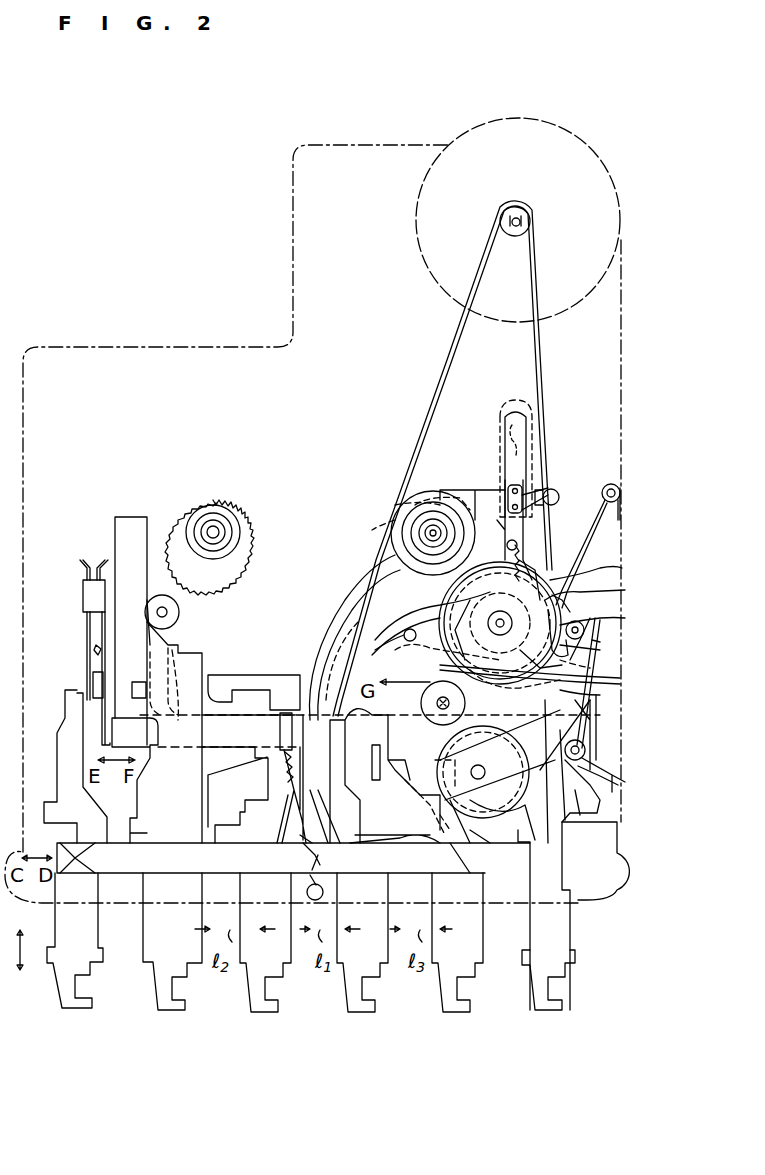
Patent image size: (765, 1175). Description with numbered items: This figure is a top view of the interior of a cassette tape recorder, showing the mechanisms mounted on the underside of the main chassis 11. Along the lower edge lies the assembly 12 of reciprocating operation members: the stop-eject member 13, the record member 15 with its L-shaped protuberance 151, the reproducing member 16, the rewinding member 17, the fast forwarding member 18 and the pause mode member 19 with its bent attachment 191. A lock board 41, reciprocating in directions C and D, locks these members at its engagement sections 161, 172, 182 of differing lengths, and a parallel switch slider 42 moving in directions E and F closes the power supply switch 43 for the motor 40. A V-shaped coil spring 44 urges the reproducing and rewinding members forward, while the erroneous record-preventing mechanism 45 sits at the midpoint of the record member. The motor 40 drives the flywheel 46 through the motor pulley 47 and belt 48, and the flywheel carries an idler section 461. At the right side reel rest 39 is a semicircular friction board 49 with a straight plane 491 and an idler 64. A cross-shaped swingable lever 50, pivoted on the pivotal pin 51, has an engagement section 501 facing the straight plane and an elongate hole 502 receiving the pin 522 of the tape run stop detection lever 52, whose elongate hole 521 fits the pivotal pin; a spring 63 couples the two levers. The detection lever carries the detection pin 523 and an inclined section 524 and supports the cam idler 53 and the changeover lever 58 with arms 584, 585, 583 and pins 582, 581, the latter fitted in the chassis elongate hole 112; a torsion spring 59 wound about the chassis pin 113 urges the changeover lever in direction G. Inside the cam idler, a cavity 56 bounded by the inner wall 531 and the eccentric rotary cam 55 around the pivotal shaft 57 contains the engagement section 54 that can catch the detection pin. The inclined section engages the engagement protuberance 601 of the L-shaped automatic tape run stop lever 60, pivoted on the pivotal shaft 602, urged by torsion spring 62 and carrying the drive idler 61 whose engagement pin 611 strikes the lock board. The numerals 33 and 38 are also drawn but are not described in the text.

The main chassis 11 is at (624, 662).
The assembly of operation members 12 is at (310, 998).
The stop-eject member 13 is at (74, 1012).
The record member 15 is at (174, 1012).
The reproducing member 16 is at (364, 1012).
The rewinding member 17 is at (270, 1012).
The fast forwarding member 18 is at (460, 1012).
The pause mode member 19 is at (555, 1012).
The slide block 33 is at (395, 780).
The gear 38 is at (234, 519).
The right side reel rest 39 is at (410, 540).
The motor 40 is at (422, 246).
The lock board 41 is at (218, 868).
The switch slider 42 is at (222, 735).
The power supply switch 43 is at (86, 650).
The coil spring 44 is at (295, 858).
The erroneous record-preventing mechanism 45 is at (182, 662).
The flywheel 46 is at (334, 630).
The motor pulley 47 is at (516, 237).
The belt 48 is at (542, 404).
The friction board 49 is at (400, 528).
The swingable lever 50 is at (480, 490).
The pivotal pin 51 is at (558, 494).
The tape run stop detection lever 52 is at (540, 520).
The cam idler 53 is at (540, 668).
The engagement section 54 is at (598, 683).
The rotary cam 55 is at (500, 610).
The cavity 56 is at (404, 636).
The pivotal shaft 57 is at (574, 630).
The changeover lever 58 is at (454, 703).
The torsion spring 59 is at (584, 553).
The automatic tape run stop lever 60 is at (596, 715).
The drive idler 61 is at (500, 785).
The torsion spring 62 is at (622, 780).
The spring 63 is at (513, 549).
The idler 64 is at (434, 602).
The elongate hole 112 is at (345, 658).
The pin 113 is at (617, 493).
The L-shaped protuberance 151 is at (415, 795).
The engagement section 161 is at (452, 862).
The engagement section 172 is at (222, 858).
The engagement section 182 is at (445, 873).
The bent attachment 191 is at (604, 692).
The idler section 461 is at (483, 772).
The straight plane 491 is at (408, 505).
The engagement section 501 is at (439, 500).
The elongate hole 502 is at (505, 455).
The elongate hole 521 is at (528, 495).
The pin 522 is at (513, 415).
The tape run stop detection pin 523 is at (500, 648).
The inclined section 524 is at (614, 624).
The inner wall 531 is at (548, 690).
The upward projecting pin 581 is at (395, 652).
The downward projecting pin 582 is at (606, 594).
The rightward projecting arm 583 is at (622, 682).
The rearward projecting arm 584 is at (608, 566).
The leftward projecting arm 585 is at (406, 669).
The engagement protuberance 601 is at (600, 645).
The pivotal shaft 602 is at (591, 796).
The engagement pin 611 is at (490, 830).